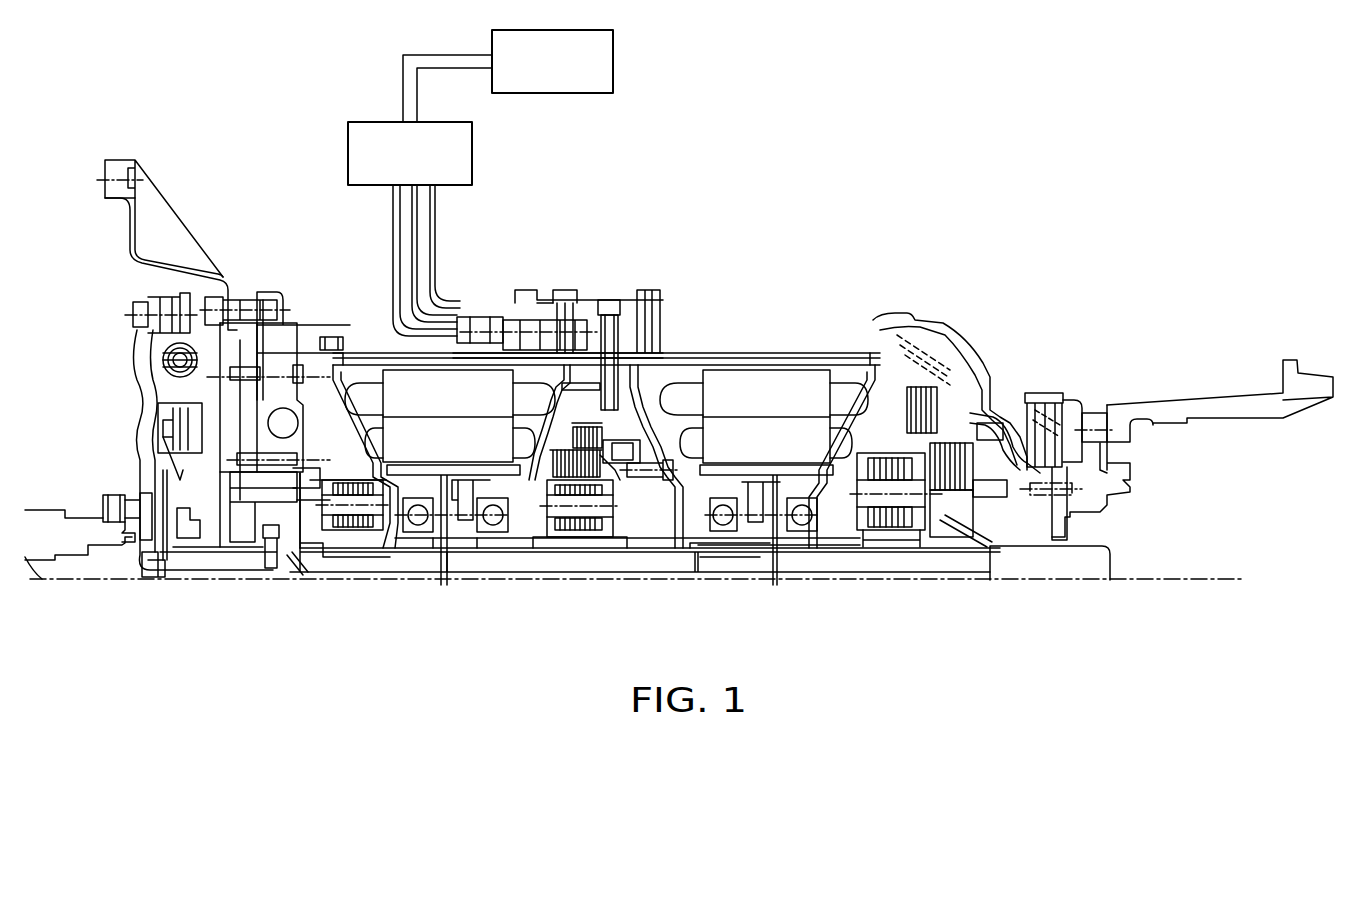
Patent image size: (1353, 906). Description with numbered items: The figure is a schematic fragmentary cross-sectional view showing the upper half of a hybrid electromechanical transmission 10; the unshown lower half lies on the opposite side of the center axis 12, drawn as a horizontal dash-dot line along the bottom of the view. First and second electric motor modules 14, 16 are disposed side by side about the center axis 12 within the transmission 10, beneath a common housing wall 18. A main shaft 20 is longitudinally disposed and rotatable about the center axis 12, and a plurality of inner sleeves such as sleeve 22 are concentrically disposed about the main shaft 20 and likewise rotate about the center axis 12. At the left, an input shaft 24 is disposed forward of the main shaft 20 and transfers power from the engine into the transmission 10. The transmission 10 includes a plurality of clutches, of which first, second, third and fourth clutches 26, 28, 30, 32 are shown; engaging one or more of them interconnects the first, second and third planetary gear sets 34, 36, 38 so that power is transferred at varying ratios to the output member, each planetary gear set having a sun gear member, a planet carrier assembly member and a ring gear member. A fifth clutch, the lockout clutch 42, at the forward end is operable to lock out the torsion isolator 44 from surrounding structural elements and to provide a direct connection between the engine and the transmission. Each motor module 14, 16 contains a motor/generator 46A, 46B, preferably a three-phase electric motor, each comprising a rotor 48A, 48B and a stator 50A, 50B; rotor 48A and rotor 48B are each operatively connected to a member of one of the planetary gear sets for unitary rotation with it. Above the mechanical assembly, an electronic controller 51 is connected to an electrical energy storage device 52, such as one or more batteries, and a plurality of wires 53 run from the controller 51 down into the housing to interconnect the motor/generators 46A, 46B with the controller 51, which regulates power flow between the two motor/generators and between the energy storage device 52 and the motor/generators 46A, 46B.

The transmission 10 is at (818, 218).
The center axis 12 is at (1155, 580).
The first electric motor module 14 is at (329, 386).
The second electric motor module 16 is at (824, 500).
The housing top wall 18 is at (800, 352).
The main shaft 20 is at (738, 565).
The inner sleeve 22 is at (757, 547).
The input shaft 24 is at (147, 565).
The first clutch 26 is at (920, 390).
The second clutch 28 is at (990, 500).
The third clutch 30 is at (630, 430).
The fourth clutch 32 is at (560, 482).
The first planetary gear set 34 is at (322, 537).
The second planetary gear set 36 is at (598, 485).
The third planetary gear set 38 is at (905, 545).
The lockout clutch 42 is at (160, 430).
The torsion isolator 44 is at (165, 361).
The motor/generator 46A is at (366, 380).
The motor/generator 46B is at (850, 383).
The rotor 48A is at (420, 472).
The rotor 48B is at (800, 472).
The stator 50A is at (357, 397).
The stator 50B is at (675, 390).
The electronic controller 51 is at (348, 148).
The electrical energy storage device 52 is at (615, 68).
The wires 53 is at (466, 267).